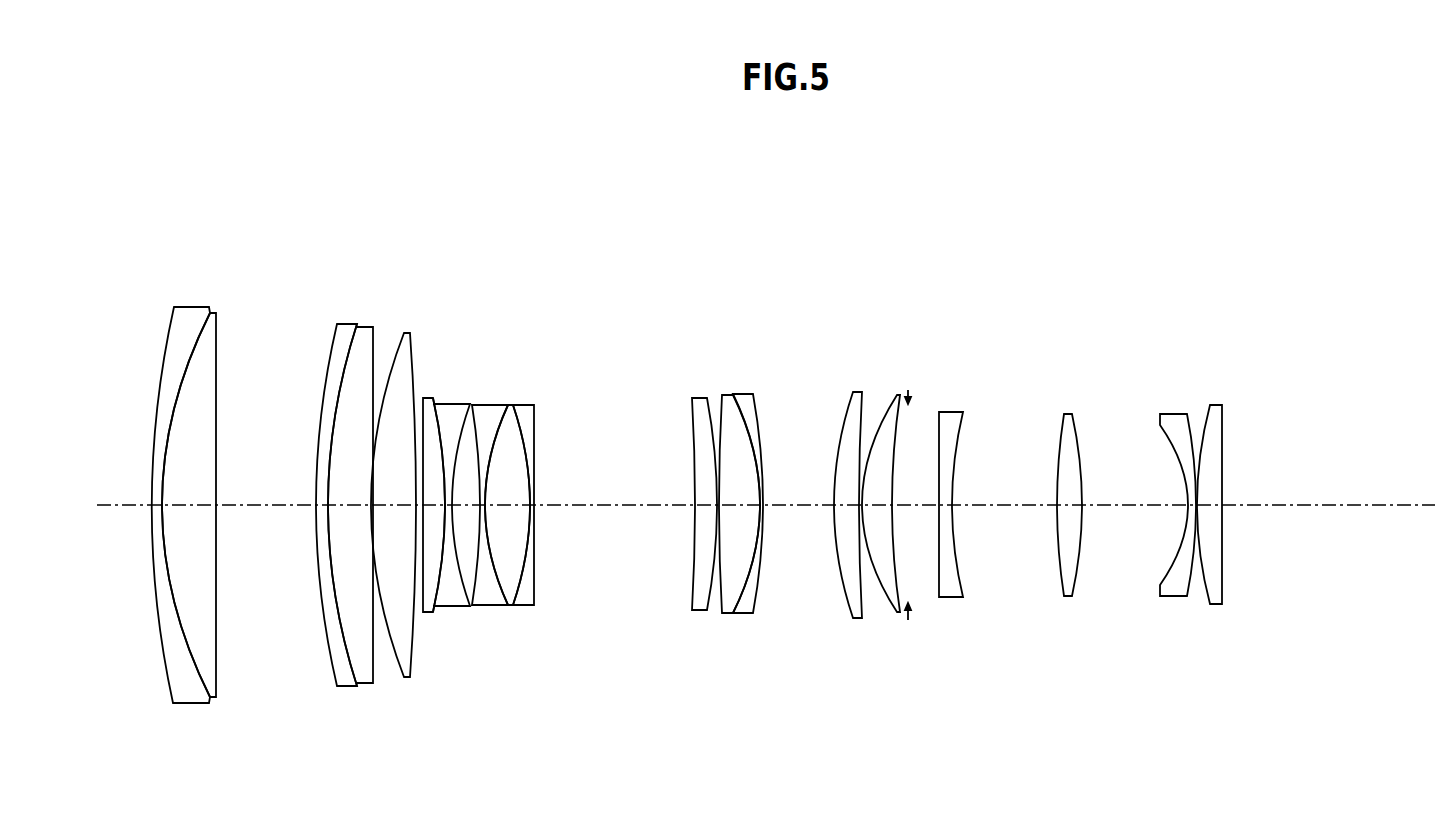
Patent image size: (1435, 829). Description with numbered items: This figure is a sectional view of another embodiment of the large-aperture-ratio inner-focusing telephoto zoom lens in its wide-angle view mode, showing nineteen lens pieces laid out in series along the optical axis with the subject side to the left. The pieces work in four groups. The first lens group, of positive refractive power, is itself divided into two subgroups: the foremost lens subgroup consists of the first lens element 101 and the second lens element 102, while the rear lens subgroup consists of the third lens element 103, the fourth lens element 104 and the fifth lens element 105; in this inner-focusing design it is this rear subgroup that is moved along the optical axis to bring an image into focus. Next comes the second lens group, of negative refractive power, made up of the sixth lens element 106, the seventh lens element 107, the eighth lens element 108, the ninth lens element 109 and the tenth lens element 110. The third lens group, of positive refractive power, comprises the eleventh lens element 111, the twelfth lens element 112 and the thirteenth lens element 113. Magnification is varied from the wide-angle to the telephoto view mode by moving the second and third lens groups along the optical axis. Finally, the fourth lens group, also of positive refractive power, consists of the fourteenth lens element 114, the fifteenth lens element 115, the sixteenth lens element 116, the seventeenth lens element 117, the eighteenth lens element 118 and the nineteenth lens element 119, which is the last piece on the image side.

The 1st lens element 101 is at (185, 688).
The 2nd lens element 102 is at (210, 688).
The 3rd lens element 103 is at (343, 680).
The 4th lens element 104 is at (363, 683).
The 5th lens element 105 is at (403, 668).
The 6th lens element 106 is at (428, 592).
The 7th lens element 107 is at (450, 587).
The 8th lens element 108 is at (487, 590).
The 9th lens element 109 is at (510, 597).
The 10th lens element 110 is at (525, 595).
The 11th lens element 111 is at (702, 597).
The 12th lens element 112 is at (727, 597).
The 13th lens element 113 is at (750, 597).
The 14th lens element 114 is at (857, 597).
The 15th lens element 115 is at (893, 597).
The 16th lens element 116 is at (952, 583).
The 17th lens element 117 is at (1067, 582).
The 18th lens element 118 is at (1172, 580).
The 19th lens element 119 is at (1217, 582).